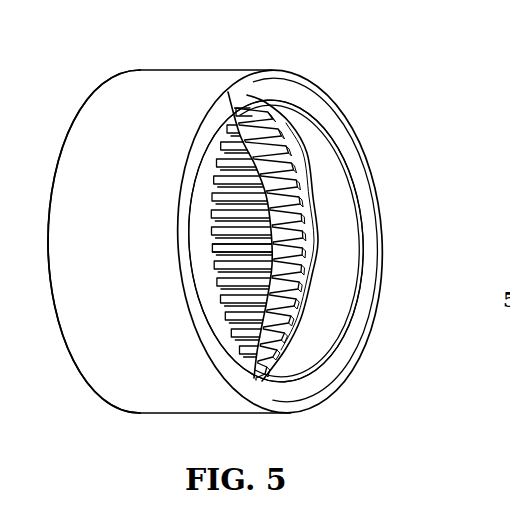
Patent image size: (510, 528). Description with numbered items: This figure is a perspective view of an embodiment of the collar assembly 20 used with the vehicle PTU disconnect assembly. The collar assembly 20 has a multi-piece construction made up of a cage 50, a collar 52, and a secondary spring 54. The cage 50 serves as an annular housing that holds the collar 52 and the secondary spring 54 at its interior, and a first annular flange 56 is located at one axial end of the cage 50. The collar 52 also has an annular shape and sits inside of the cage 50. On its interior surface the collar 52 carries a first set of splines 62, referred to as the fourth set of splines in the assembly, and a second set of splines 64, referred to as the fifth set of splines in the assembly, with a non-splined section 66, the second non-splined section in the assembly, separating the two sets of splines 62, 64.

The collar assembly 20 is at (342, 100).
The cage 50 is at (174, 93).
The collar 52 is at (292, 125).
The secondary spring 54 is at (336, 212).
The first annular flange 56 is at (352, 153).
The first set of splines 62 is at (284, 178).
The second set of splines 64 is at (243, 198).
The non-splined section 66 is at (283, 237).